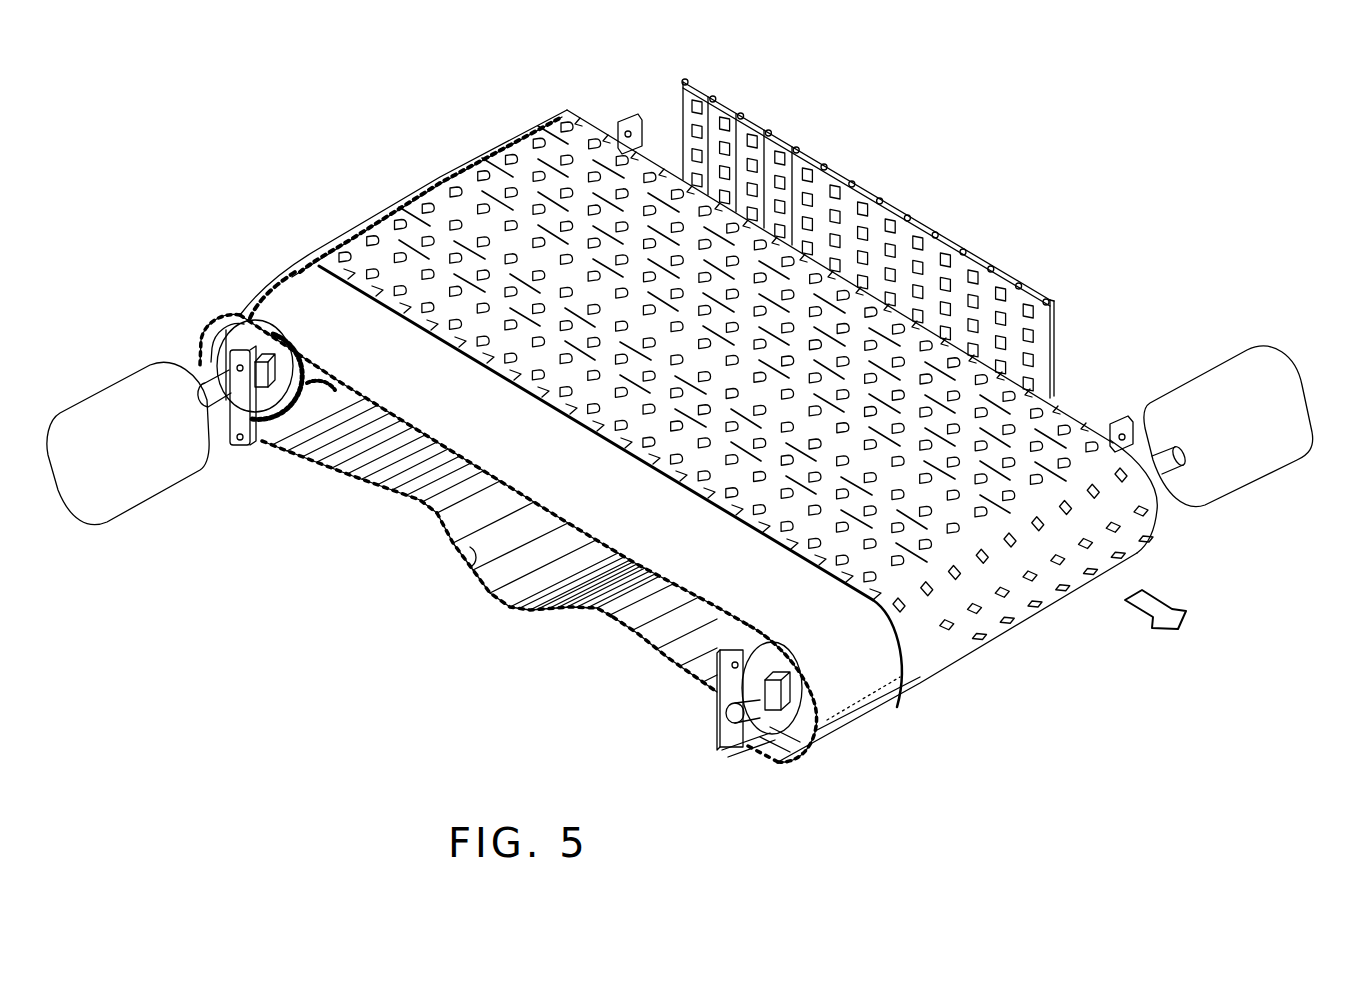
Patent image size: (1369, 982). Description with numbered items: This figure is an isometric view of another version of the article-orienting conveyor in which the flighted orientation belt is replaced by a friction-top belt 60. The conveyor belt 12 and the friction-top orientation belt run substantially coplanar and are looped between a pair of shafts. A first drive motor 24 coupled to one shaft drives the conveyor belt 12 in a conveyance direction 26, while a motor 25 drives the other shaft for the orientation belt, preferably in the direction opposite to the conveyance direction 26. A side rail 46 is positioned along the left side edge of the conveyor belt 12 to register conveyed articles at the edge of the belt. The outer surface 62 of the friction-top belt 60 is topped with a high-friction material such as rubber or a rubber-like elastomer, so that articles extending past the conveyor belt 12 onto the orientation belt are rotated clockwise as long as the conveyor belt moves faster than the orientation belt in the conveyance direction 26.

The conveyor belt 12 is at (471, 172).
The first drive motor 24 is at (1303, 406).
The motor 25 is at (147, 492).
The conveyance direction 26 is at (1152, 592).
The side rail 46 is at (897, 213).
The friction-top belt 60 is at (470, 548).
The outer surface 62 is at (420, 405).